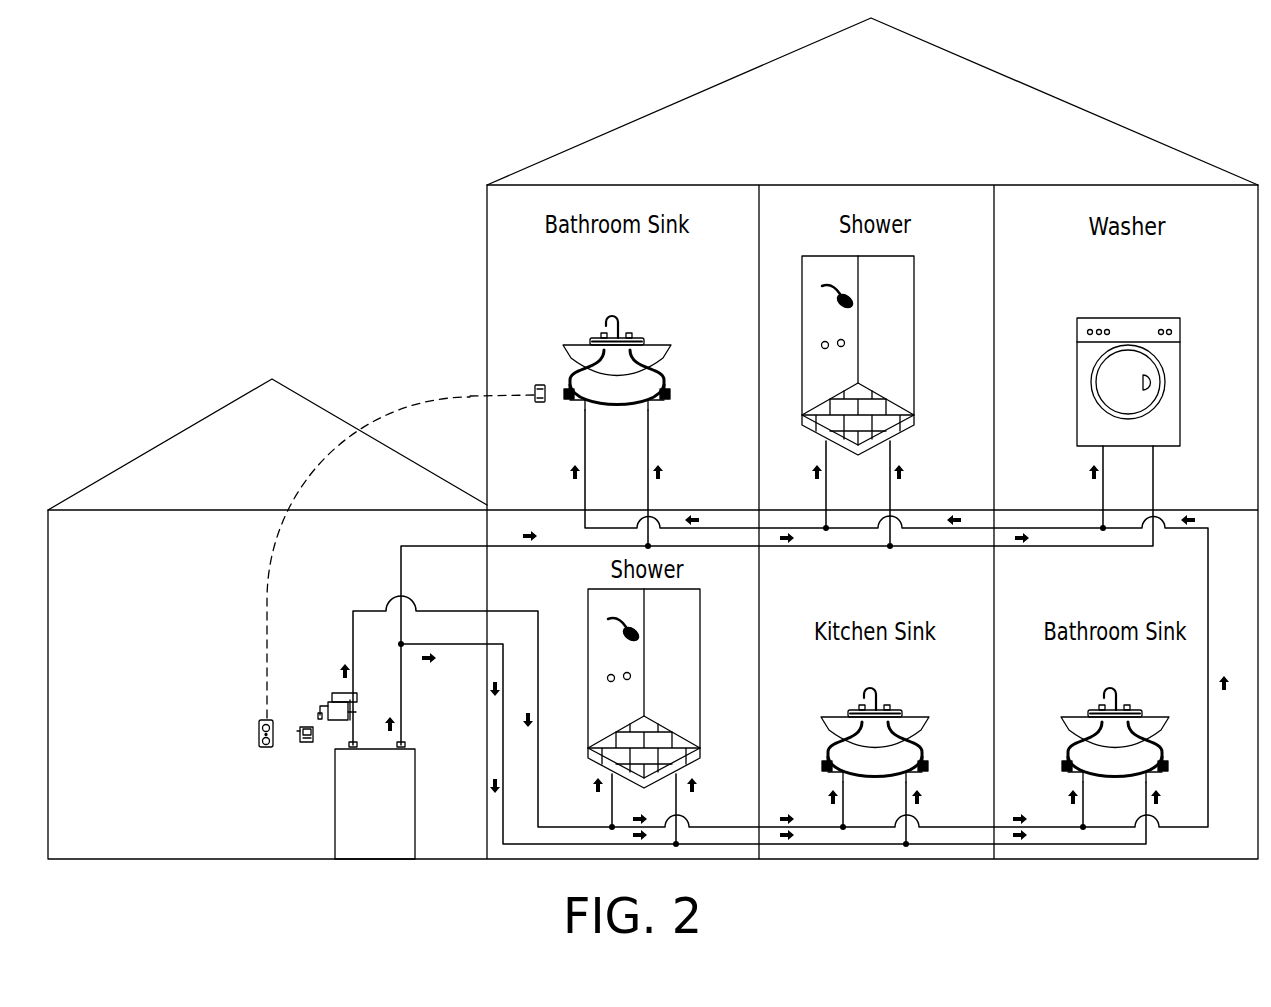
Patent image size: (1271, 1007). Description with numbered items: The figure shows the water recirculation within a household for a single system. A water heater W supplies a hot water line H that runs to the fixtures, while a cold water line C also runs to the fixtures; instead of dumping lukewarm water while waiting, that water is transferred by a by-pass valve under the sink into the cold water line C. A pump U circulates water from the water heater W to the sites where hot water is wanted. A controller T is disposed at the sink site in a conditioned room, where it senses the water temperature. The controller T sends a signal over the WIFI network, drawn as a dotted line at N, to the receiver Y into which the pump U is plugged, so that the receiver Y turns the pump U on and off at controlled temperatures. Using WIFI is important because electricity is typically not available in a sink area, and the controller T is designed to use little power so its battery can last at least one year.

The hot water line H is at (425, 603).
The cold water line C is at (461, 657).
The water heater W is at (322, 805).
The pump U is at (312, 683).
The receiver Y is at (290, 757).
The WIFI network N is at (292, 470).
The WIFI network WIFI is at (395, 399).
The controller T is at (536, 423).